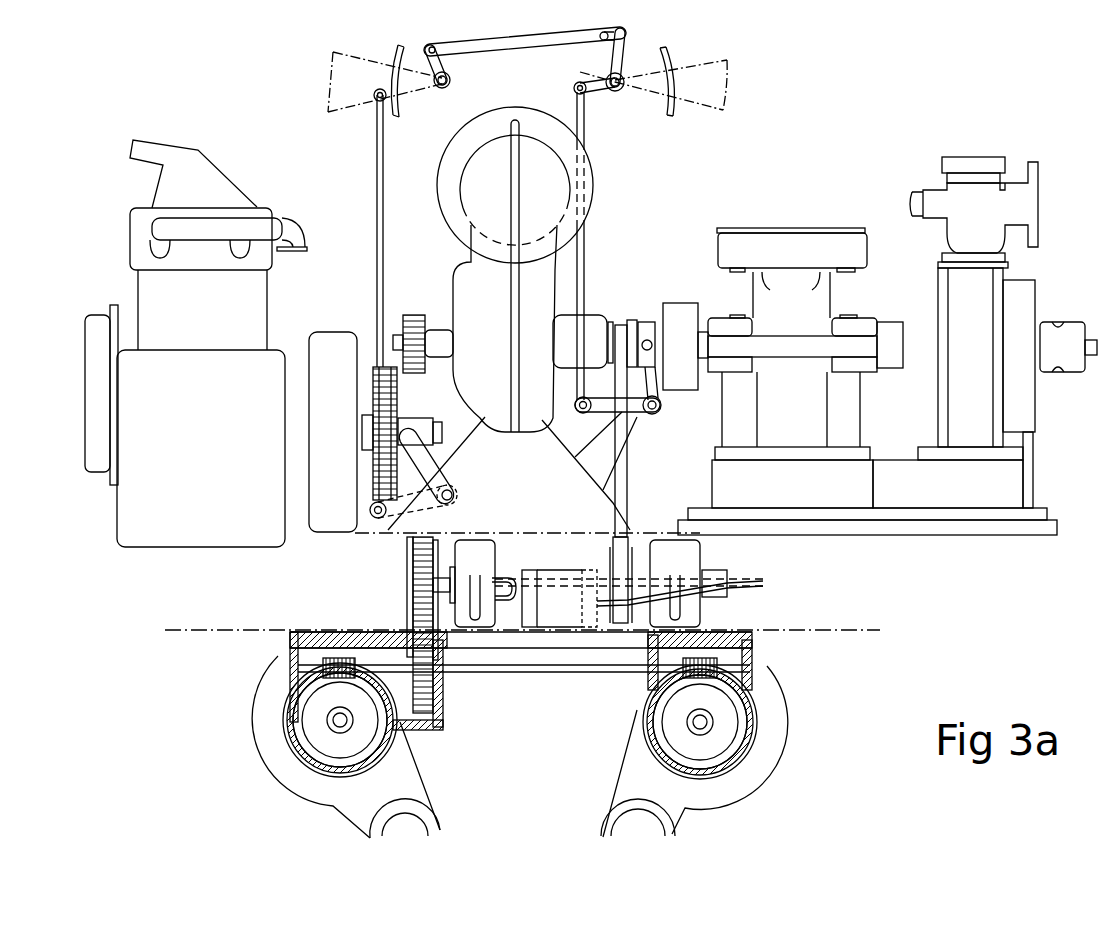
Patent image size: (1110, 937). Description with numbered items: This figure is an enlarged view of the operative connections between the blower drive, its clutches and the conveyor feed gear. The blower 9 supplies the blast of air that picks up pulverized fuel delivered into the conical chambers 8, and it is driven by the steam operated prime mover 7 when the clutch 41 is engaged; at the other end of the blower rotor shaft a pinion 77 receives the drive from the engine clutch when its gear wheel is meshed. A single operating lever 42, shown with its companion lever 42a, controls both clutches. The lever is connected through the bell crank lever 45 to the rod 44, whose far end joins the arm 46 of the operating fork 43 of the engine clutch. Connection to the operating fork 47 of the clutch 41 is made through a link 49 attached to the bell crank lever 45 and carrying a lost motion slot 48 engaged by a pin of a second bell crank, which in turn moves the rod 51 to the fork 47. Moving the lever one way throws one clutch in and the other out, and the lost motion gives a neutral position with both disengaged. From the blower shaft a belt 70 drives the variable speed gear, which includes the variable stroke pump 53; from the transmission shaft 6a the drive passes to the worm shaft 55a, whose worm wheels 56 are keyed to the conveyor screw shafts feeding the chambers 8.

The operating lever 42 is at (333, 77).
The bell crank lever 45 is at (420, 95).
The link 49 is at (537, 46).
The lost motion slot 48 is at (628, 35).
The sector arm 42a is at (730, 74).
The blower 9 is at (494, 148).
The rod 44 is at (377, 233).
The rod 51 is at (594, 260).
The pinion 77 is at (413, 312).
The clutch 41 is at (646, 328).
The steam operated prime mover 7 is at (947, 313).
The operating fork 47 is at (665, 390).
The operating fork 43 is at (430, 459).
The belt 70 is at (628, 468).
The arm 46 is at (370, 510).
The transmission shaft 6a is at (440, 578).
The variable stroke pump 53 is at (540, 607).
The worm shaft 55a is at (568, 674).
The worm wheels 56 is at (297, 726).
The conical chambers 8 is at (407, 773).